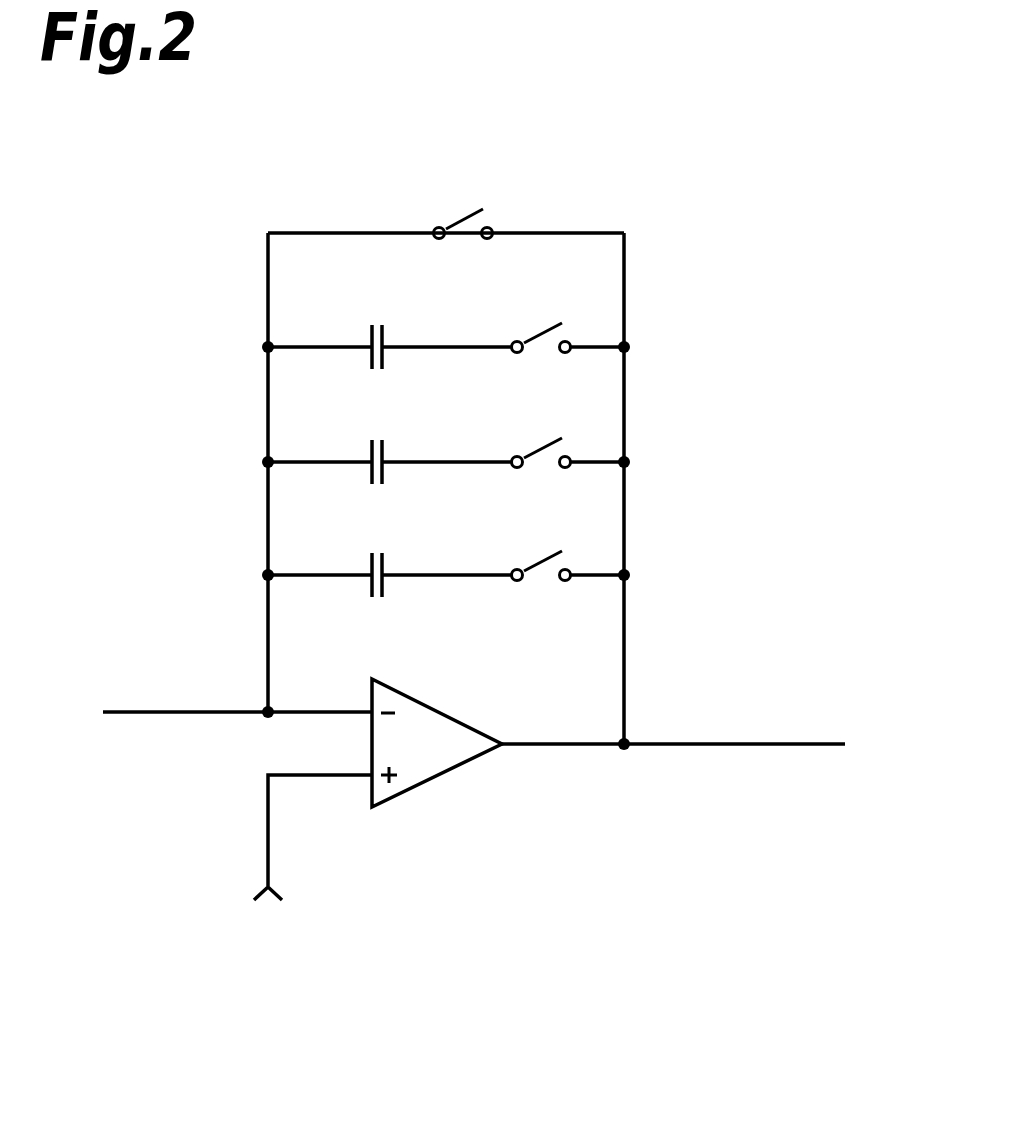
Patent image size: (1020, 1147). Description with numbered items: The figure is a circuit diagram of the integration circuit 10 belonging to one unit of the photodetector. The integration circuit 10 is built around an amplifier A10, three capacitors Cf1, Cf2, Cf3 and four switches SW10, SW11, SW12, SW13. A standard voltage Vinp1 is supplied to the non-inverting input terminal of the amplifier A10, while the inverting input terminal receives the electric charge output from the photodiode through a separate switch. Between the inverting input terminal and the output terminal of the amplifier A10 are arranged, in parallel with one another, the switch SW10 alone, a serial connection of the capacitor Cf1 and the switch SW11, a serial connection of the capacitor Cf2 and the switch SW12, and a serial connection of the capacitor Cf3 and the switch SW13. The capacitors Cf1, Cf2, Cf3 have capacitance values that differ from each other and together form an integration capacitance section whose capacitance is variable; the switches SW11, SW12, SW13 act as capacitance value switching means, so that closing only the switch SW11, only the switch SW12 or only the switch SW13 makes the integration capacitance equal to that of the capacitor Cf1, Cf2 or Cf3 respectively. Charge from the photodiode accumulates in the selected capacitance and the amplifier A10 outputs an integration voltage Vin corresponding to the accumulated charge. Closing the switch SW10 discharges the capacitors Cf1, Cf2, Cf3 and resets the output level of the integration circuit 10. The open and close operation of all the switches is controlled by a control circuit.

The integration circuit 10 is at (819, 218).
The switch SW10 is at (465, 221).
The switch SW11 is at (542, 338).
The switch SW12 is at (542, 453).
The switch SW13 is at (542, 566).
The capacitor Cf1 is at (368, 359).
The capacitor Cf2 is at (368, 474).
The capacitor Cf3 is at (368, 587).
The amplifier A10 is at (443, 773).
The integration voltage Vin is at (676, 722).
The standard voltage Vinp1 is at (305, 860).